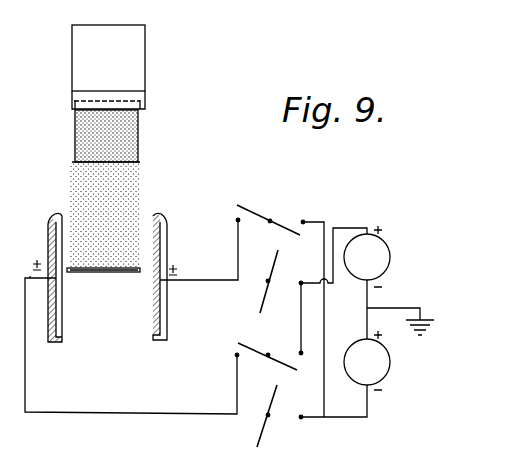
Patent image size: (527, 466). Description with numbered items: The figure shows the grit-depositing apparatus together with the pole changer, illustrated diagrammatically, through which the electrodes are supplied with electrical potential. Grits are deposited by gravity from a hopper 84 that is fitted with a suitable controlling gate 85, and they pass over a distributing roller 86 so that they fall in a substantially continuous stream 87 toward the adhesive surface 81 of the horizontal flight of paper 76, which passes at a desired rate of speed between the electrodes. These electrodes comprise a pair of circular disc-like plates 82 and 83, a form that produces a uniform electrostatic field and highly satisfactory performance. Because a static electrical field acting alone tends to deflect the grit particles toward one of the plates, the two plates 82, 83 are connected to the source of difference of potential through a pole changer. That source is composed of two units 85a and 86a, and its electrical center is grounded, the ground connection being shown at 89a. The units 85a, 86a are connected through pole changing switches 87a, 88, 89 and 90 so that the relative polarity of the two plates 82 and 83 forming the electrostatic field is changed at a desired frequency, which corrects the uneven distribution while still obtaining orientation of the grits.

The hopper 84 is at (137, 62).
The controlling gate 85 is at (141, 102).
The distributing roller 86 is at (139, 135).
The continuous stream 87 is at (130, 193).
The paper 76 is at (120, 272).
The adhesive surface 81 is at (82, 272).
The plate electrode 82 is at (60, 333).
The plate electrode 83 is at (150, 333).
The pole changing switch 87a is at (257, 215).
The pole changing switch 88 is at (265, 298).
The pole changing switch 89 is at (258, 352).
The pole changing switch 90 is at (263, 427).
The source unit 85a is at (390, 253).
The source unit 86a is at (383, 365).
The ground connection 89a is at (422, 310).